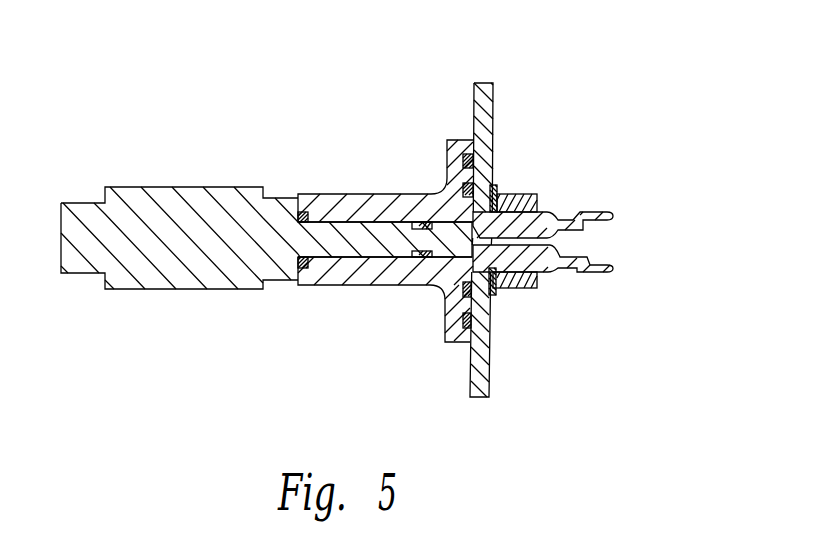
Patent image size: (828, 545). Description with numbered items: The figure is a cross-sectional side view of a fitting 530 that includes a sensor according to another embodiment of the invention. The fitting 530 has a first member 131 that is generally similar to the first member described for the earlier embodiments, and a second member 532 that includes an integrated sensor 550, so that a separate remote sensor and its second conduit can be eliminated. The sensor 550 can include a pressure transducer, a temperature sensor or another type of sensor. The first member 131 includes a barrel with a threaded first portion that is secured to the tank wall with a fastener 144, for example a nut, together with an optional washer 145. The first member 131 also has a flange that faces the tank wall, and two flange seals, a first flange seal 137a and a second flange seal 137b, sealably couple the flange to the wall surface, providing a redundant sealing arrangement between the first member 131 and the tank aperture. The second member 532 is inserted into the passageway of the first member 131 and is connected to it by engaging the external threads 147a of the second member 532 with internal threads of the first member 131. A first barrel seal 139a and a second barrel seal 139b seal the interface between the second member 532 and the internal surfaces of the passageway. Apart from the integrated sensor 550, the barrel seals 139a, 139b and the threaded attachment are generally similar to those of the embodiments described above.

The fitting 530 is at (178, 105).
The sensor 550 is at (197, 273).
The second member 532 is at (386, 222).
The first member 131 is at (402, 197).
The external threads 147a is at (333, 222).
The first barrel seal 139a is at (308, 266).
The second barrel seal 139b is at (412, 260).
The first flange seal 137a is at (471, 195).
The second flange seal 137b is at (476, 163).
The washer 145 is at (497, 187).
The fastener 144 is at (537, 195).